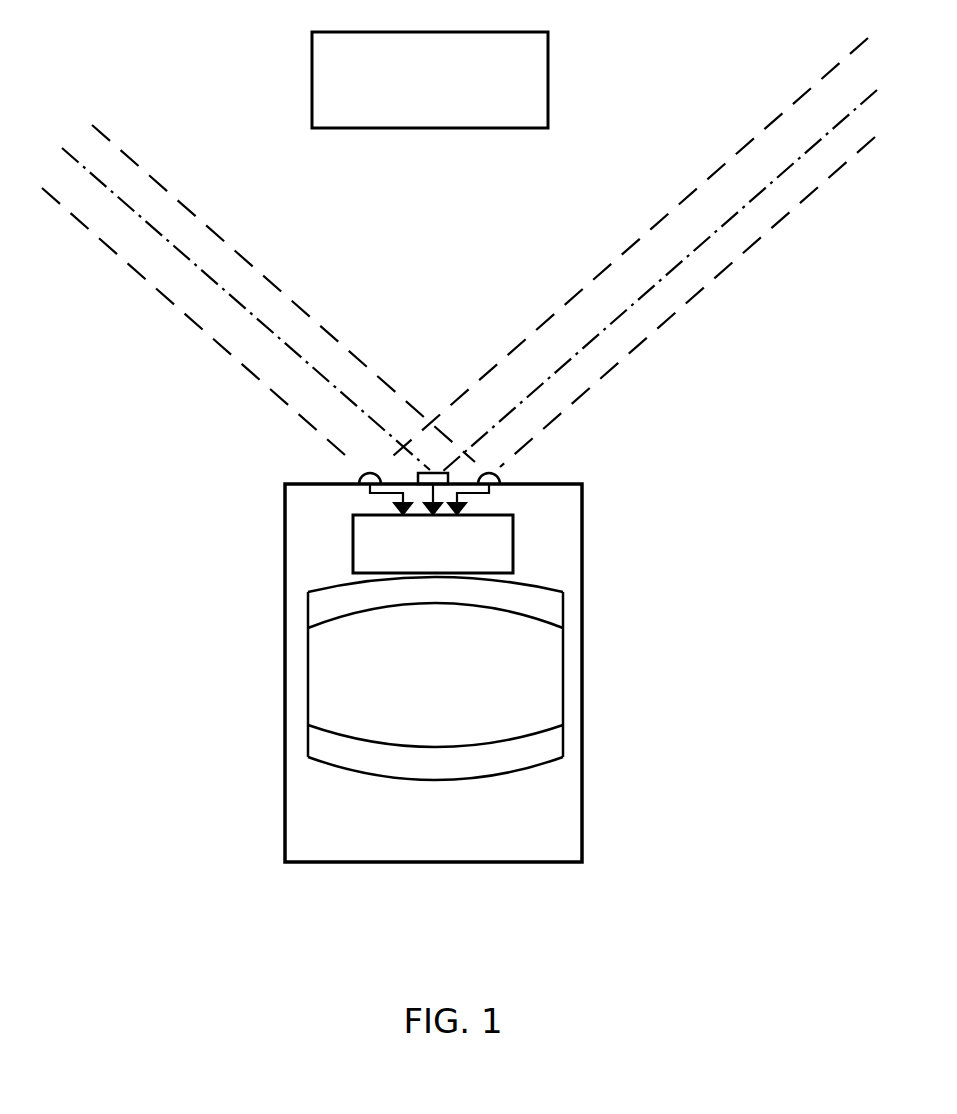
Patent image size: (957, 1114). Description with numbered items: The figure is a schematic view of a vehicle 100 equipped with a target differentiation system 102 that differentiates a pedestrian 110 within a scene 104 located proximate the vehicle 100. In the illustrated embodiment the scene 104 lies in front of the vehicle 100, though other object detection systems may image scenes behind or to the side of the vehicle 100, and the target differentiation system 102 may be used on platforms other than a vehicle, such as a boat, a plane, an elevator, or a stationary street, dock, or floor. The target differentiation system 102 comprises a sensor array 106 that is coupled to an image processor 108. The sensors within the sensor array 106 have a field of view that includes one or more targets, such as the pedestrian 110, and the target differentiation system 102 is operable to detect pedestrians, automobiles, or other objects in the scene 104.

The vehicle 100 is at (582, 569).
The target differentiation system 102 is at (522, 472).
The scene 104 is at (692, 43).
The sensor array 106 is at (340, 476).
The image processor 108 is at (515, 535).
The pedestrian 110 is at (440, 128).